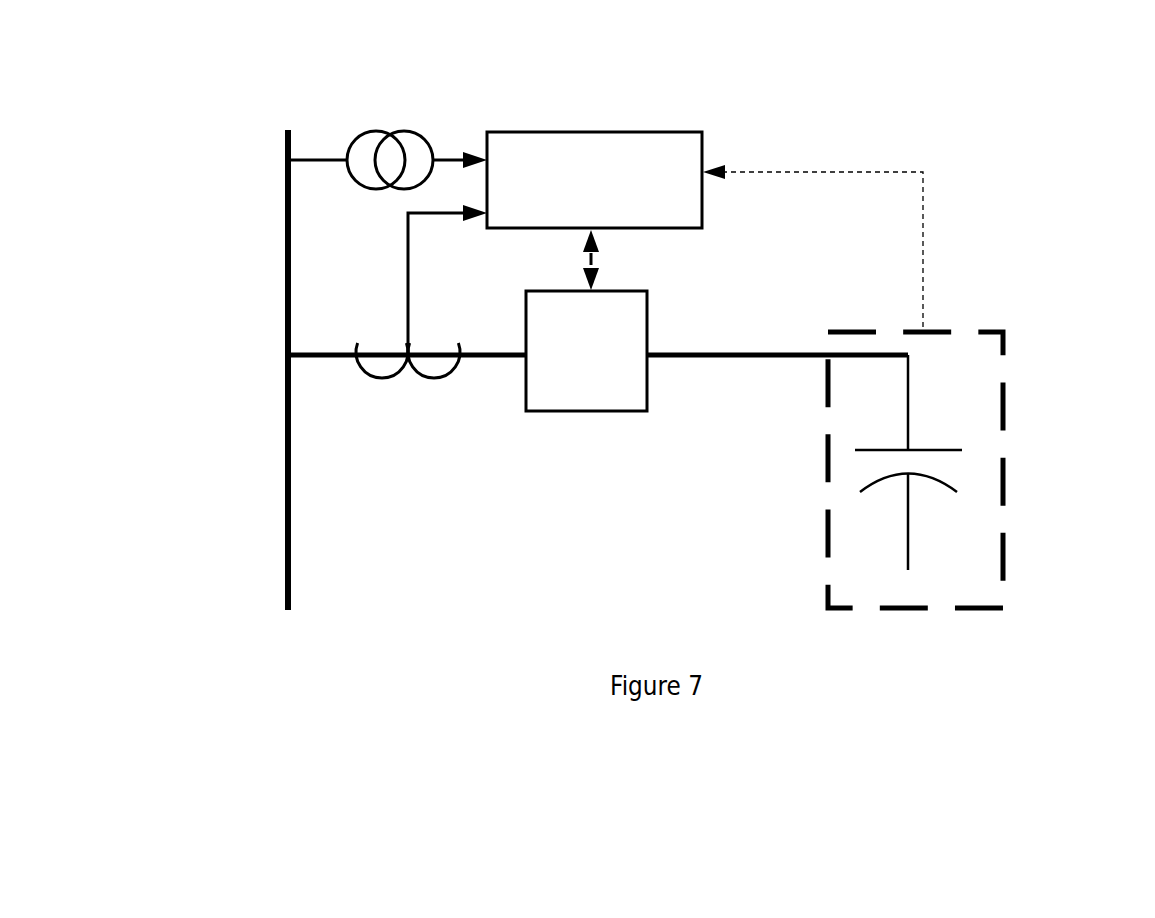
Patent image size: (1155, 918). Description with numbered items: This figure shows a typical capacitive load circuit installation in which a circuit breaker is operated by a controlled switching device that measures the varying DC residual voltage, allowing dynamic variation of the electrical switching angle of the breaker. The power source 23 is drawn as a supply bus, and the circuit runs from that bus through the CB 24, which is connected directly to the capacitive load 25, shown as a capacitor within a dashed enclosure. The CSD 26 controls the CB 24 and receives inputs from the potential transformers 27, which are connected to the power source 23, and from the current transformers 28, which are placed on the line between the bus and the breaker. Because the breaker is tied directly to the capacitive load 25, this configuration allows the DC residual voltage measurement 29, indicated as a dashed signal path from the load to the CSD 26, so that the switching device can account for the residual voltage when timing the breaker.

The power source 23 is at (354, 370).
The circuit breaker (CB) 24 is at (615, 416).
The capacitive load 25 is at (890, 470).
The controlled switching device (CSD) 26 is at (656, 156).
The potential transformers 27 is at (431, 105).
The current transformers 28 is at (421, 373).
The DC residual voltage measurement 29 is at (875, 237).